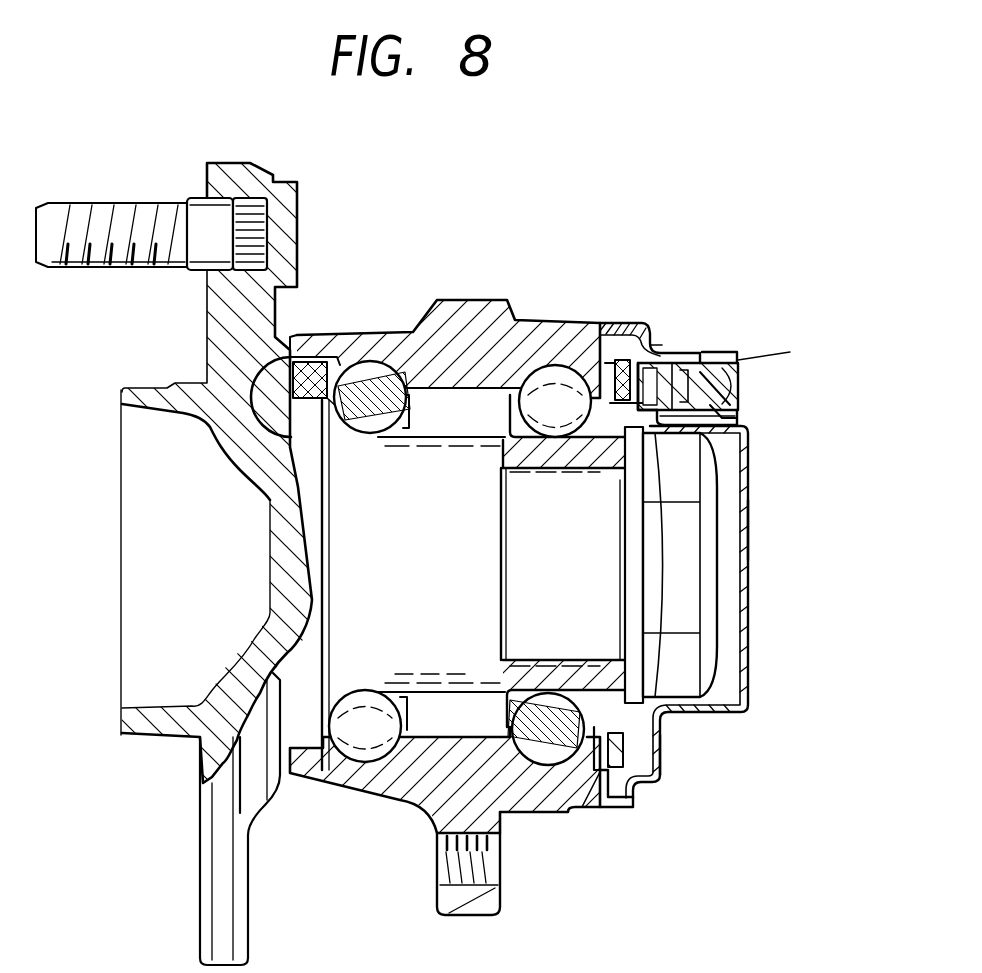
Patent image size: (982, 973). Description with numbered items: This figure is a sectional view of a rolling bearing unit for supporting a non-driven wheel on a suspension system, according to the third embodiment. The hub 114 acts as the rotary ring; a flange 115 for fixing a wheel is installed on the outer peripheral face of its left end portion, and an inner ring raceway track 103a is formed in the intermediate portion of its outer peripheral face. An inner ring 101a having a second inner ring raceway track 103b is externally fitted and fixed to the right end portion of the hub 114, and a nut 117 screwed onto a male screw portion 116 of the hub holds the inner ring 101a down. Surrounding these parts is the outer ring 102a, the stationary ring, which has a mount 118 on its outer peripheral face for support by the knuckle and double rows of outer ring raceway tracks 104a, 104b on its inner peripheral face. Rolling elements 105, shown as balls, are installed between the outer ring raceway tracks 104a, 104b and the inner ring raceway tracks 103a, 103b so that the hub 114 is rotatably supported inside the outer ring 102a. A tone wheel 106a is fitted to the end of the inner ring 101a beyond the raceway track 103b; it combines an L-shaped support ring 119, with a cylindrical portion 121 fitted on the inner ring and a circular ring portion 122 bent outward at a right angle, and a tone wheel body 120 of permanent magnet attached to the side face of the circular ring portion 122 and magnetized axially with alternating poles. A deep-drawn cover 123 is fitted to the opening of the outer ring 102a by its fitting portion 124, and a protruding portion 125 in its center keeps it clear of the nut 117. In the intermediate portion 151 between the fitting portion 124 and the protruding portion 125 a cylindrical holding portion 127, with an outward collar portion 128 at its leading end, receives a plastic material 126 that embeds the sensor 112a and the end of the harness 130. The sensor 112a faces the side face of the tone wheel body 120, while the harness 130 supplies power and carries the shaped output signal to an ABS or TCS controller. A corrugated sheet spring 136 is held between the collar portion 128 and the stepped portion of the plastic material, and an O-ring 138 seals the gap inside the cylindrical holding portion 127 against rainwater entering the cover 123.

The inner ring 101a is at (570, 453).
The outer ring 102a is at (420, 345).
The inner ring raceway track 103a is at (370, 430).
The inner ring raceway track 103b is at (513, 447).
The outer ring raceway track 104a is at (380, 758).
The outer ring raceway track 104b is at (547, 762).
The rolling elements 105 is at (362, 365).
The tone wheel 106a is at (600, 810).
The sensor 112a is at (668, 345).
The hub 114 is at (337, 537).
The flange 115 is at (222, 332).
The male screw portion 116 is at (620, 607).
The nut 117 is at (690, 607).
The mount 118 is at (452, 903).
The support ring 119 is at (633, 810).
The tone wheel body 120 is at (627, 750).
The cylindrical portion 121 is at (578, 385).
The circular ring portion 122 is at (603, 325).
The cover 123 is at (750, 687).
The fitting portion 124 is at (632, 350).
The protruding portion 125 is at (750, 538).
The plastic material 126 is at (688, 350).
The cylindrical holding portion 127 is at (737, 387).
The collar portion 128 is at (703, 410).
The harness 130 is at (792, 350).
The corrugated sheet spring 136 is at (722, 352).
The O-ring 138 is at (680, 350).
The intermediate portion 151 is at (660, 757).